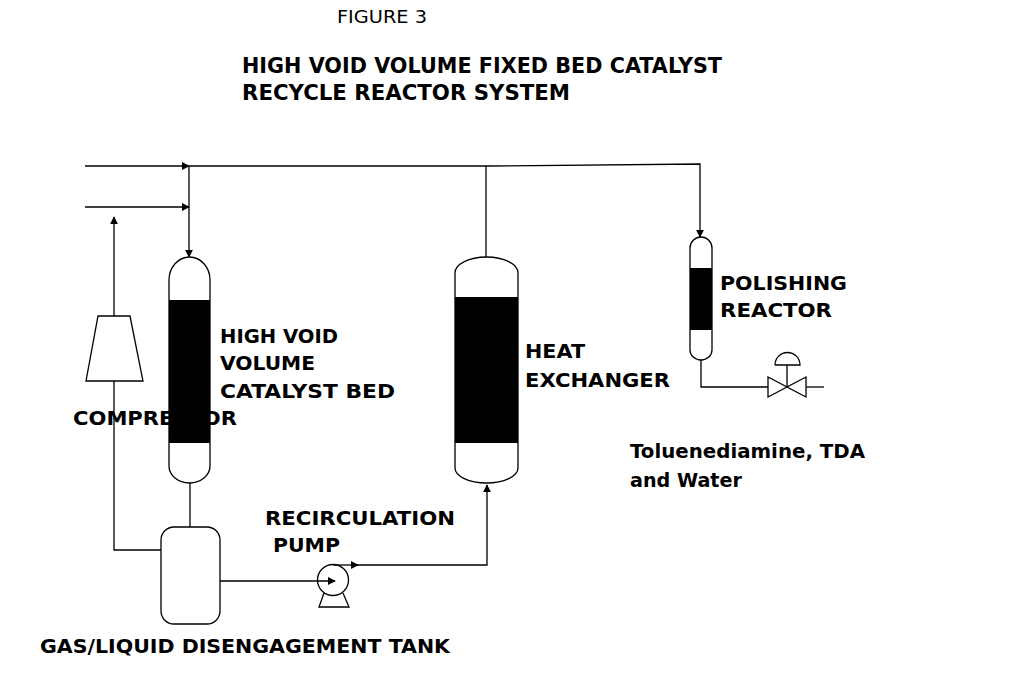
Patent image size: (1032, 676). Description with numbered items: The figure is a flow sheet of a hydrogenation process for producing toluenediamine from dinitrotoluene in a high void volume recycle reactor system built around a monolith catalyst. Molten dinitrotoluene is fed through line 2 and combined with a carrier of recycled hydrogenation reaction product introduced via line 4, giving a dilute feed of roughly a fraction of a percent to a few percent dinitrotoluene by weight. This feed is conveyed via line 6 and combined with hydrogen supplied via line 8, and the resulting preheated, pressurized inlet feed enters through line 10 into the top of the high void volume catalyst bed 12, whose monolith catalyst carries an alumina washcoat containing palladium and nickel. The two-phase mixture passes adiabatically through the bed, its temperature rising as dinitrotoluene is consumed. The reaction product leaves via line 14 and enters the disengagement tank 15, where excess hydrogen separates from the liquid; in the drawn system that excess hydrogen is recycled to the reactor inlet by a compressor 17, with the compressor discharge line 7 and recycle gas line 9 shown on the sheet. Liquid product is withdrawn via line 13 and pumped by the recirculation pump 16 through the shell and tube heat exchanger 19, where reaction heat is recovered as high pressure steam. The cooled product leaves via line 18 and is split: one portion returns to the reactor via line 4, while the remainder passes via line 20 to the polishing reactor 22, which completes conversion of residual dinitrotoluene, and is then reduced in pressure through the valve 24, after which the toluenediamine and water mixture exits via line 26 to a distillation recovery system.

The line 2 is at (186, 147).
The line 4 is at (337, 152).
The line 6 is at (147, 189).
The compressor discharge line 7 is at (99, 266).
The line 8 is at (102, 200).
The recycle gas line 9 is at (127, 465).
The line 10 is at (206, 211).
The high void volume catalyst bed 12 is at (213, 370).
The line 13 is at (277, 597).
The line 14 is at (173, 505).
The disengagement tank 15 is at (190, 575).
The recirculation pump 16 is at (355, 567).
The compressor 17 is at (114, 348).
The line 18 is at (467, 211).
The heat exchanger 19 is at (464, 370).
The line 20 is at (593, 182).
The polishing reactor 22 is at (681, 298).
The valve 24 is at (787, 393).
The line 26 is at (839, 378).